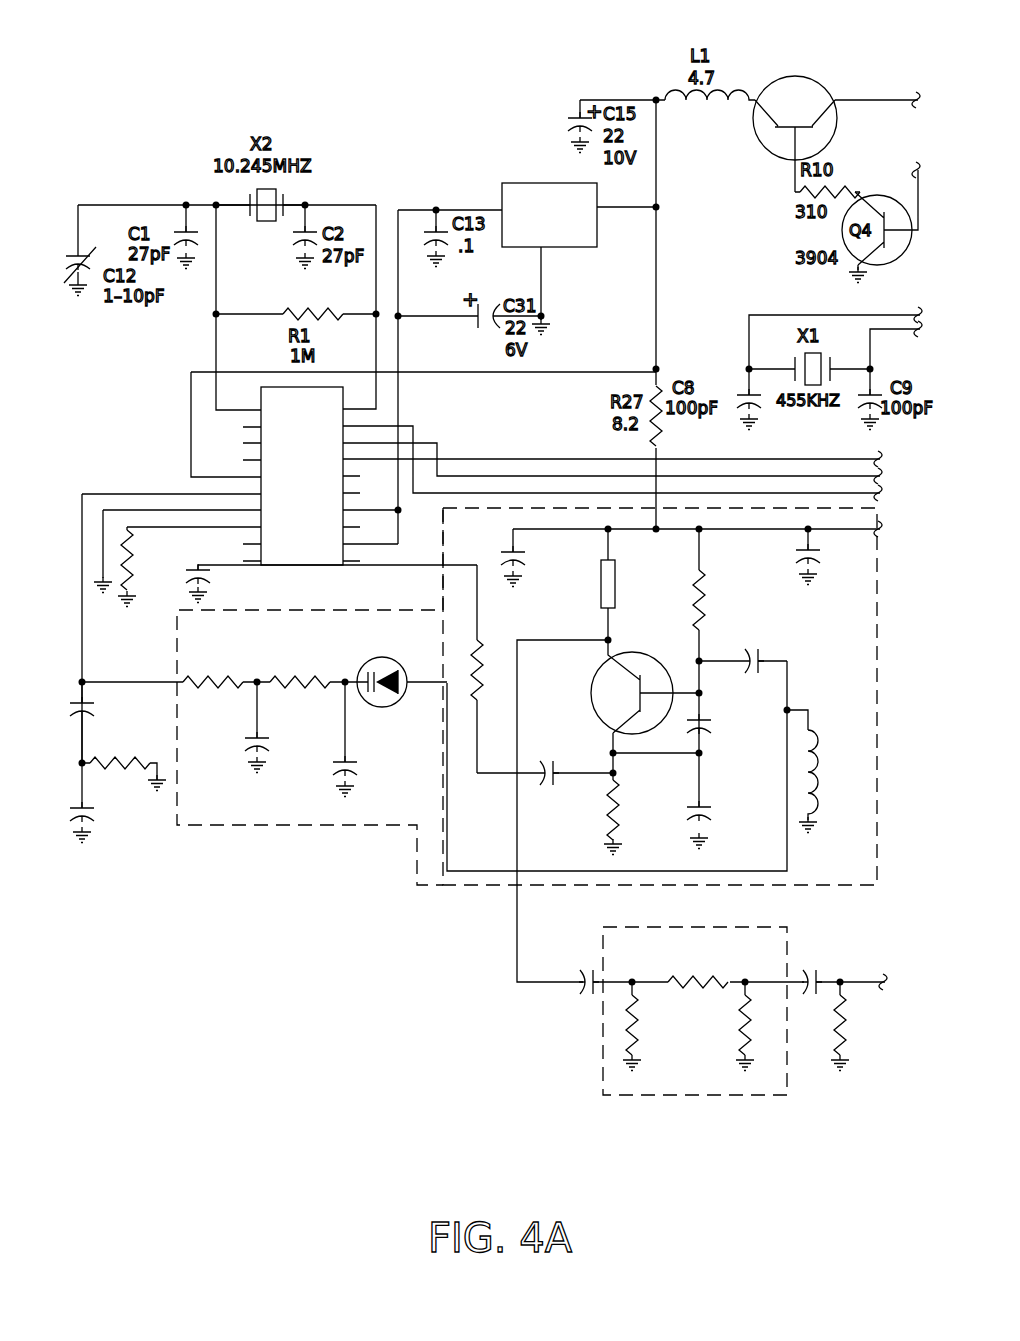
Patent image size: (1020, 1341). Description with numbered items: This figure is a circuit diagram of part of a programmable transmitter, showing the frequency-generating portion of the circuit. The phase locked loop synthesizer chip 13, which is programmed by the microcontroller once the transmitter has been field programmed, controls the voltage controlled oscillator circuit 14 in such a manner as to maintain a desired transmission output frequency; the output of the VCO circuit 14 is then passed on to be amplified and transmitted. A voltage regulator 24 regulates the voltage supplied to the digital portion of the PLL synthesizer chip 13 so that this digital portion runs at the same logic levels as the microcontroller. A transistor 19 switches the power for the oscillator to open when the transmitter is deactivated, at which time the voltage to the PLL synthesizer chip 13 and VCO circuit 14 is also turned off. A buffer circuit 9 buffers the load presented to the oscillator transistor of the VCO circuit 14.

The transistor 19 is at (800, 76).
The voltage regulator 24 is at (518, 178).
The phase locked loop synthesizer chip 13 is at (278, 390).
The voltage controlled oscillator circuit 14 is at (478, 880).
The buffer circuit 9 is at (668, 1118).